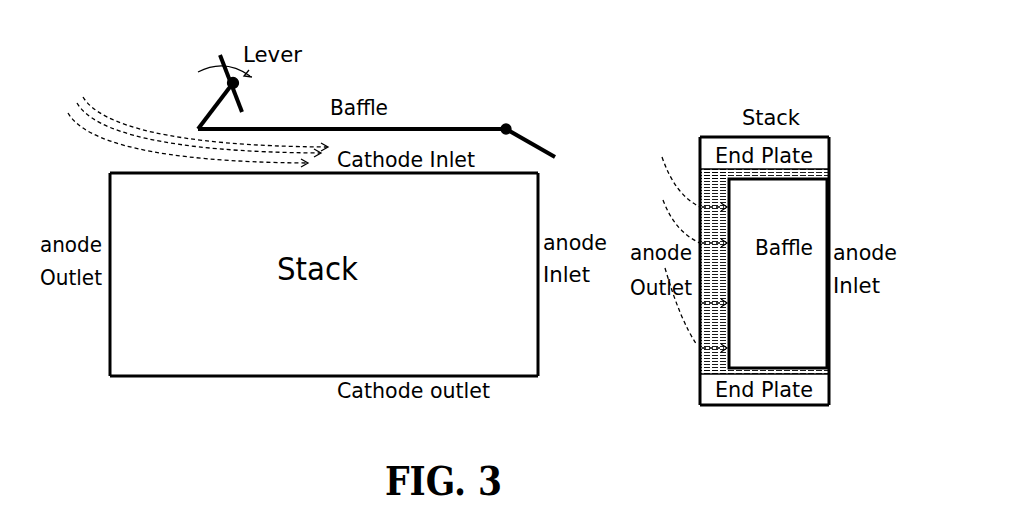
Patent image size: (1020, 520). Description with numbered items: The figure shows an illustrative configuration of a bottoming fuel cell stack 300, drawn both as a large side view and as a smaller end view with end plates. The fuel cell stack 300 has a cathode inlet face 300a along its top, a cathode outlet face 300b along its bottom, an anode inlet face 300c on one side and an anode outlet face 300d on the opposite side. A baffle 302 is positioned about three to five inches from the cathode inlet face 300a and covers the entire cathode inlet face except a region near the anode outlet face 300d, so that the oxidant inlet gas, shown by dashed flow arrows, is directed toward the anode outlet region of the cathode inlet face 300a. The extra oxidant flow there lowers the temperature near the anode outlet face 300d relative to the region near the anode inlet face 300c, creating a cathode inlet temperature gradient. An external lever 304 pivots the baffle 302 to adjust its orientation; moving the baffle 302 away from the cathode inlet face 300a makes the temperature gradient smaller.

The fuel cell stack 300 is at (463, 263).
The cathode inlet face 300a is at (131, 172).
The cathode outlet face 300b is at (228, 378).
The anode inlet face 300c is at (542, 358).
The anode outlet face 300d is at (110, 338).
The baffle 302 is at (453, 127).
The external lever 304 is at (222, 57).